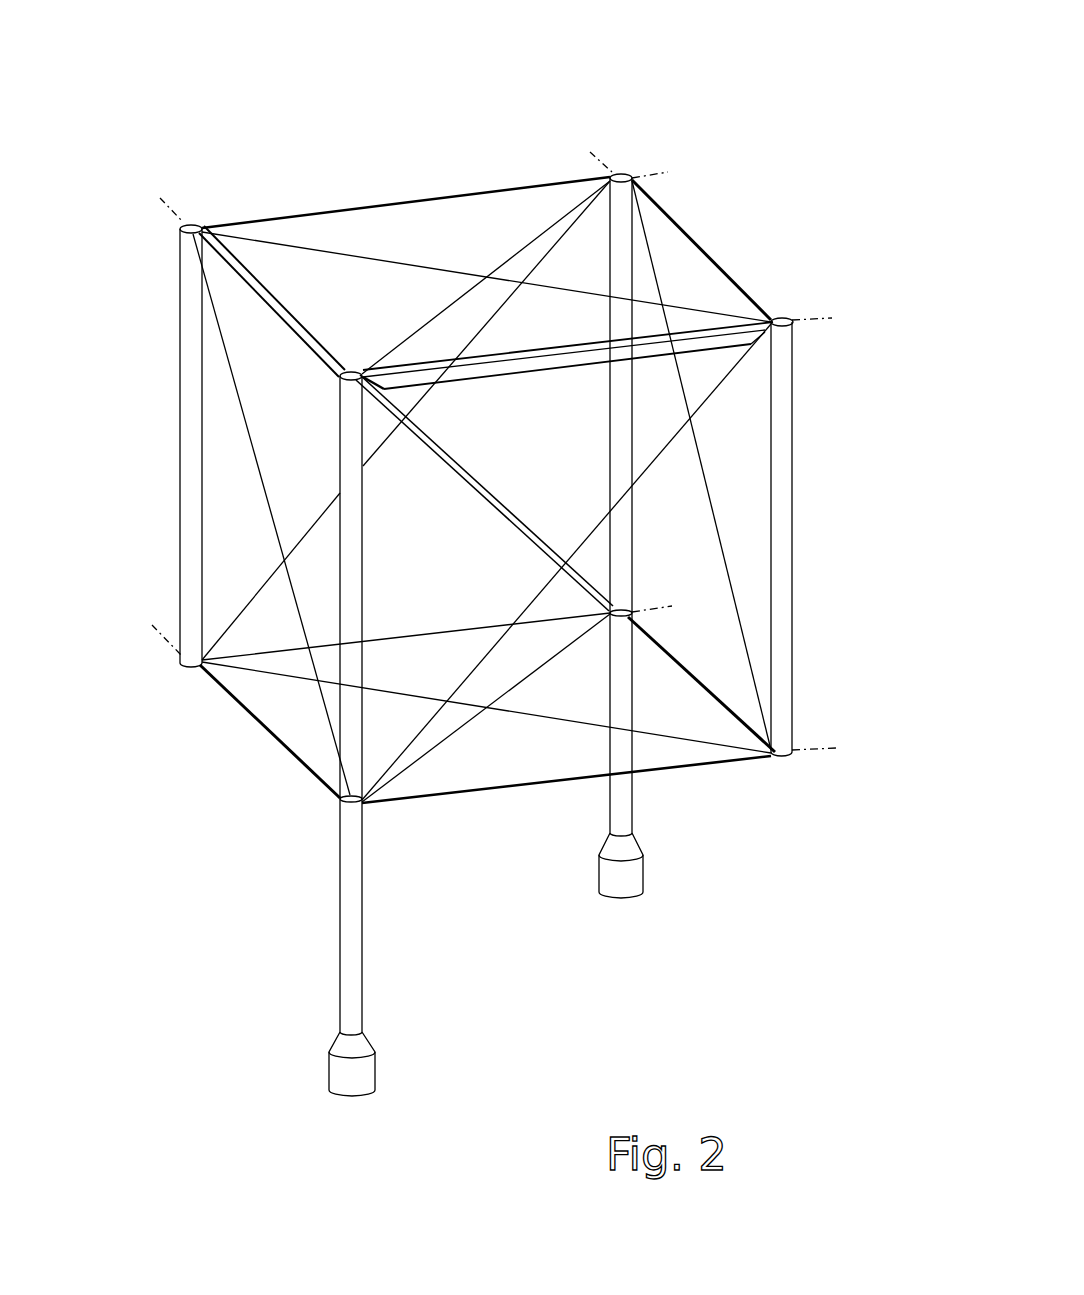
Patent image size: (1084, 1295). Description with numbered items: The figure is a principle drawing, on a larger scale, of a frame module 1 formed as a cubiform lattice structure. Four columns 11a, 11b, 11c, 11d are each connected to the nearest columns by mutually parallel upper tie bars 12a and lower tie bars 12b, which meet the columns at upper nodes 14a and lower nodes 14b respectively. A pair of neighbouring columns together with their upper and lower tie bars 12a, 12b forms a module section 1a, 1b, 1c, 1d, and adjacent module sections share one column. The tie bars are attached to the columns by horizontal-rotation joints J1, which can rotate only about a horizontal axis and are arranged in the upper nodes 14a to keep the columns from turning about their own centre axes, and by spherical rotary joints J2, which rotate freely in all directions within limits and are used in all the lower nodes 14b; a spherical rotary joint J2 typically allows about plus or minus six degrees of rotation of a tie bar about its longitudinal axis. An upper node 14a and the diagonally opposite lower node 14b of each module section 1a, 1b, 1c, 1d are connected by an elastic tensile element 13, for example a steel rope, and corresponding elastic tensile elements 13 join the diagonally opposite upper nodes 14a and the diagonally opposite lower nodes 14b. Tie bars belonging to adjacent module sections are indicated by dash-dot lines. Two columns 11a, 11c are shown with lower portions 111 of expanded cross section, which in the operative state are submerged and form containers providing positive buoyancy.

The frame module 1 is at (502, 551).
The module section 1a is at (508, 736).
The module section 1b is at (572, 361).
The module section 1c is at (762, 538).
The module section 1d is at (464, 738).
The column 11a is at (346, 736).
The column 11b is at (791, 523).
The column 11c is at (633, 252).
The column 11d is at (183, 509).
The lower portion 111 is at (330, 1065).
The upper tie bar 12a is at (457, 195).
The lower tie bar 12b is at (466, 632).
The elastic tensile element 13 is at (412, 266).
The upper node 14a is at (636, 160).
The lower node 14b is at (650, 624).
The horizontal-rotation joint J1 is at (613, 168).
The spherical rotary joint J2 is at (640, 170).